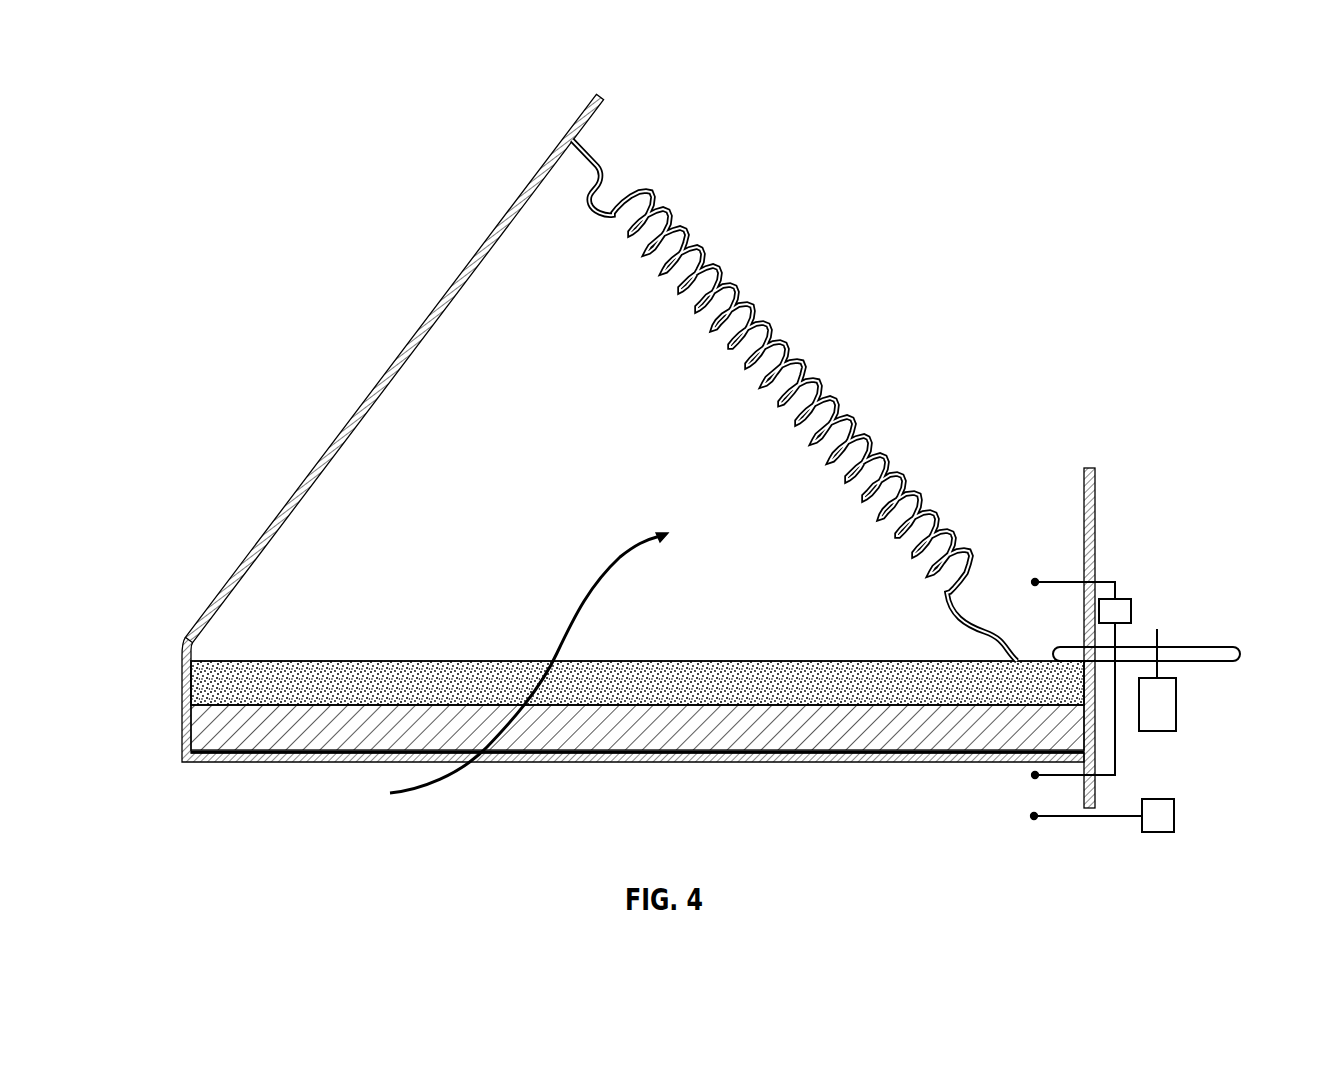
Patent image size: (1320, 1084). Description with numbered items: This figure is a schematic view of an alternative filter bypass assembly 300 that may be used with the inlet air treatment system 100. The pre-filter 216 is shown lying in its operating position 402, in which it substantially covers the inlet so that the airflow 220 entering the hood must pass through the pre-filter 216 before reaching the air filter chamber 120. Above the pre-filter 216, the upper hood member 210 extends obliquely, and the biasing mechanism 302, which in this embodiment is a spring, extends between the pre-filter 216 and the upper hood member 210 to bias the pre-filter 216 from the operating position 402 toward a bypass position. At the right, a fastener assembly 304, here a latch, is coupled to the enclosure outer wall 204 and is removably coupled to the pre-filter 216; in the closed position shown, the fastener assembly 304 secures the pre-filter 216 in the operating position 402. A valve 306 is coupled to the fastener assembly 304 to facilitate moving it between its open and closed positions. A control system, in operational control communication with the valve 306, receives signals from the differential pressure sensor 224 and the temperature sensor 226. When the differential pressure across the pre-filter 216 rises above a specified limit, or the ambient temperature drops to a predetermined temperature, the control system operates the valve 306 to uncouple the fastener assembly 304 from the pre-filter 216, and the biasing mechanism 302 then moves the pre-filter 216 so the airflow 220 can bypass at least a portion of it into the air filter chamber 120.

The inlet air treatment system 100 is at (885, 138).
The air filter chamber 120 is at (1182, 265).
The outer wall 204 is at (1097, 505).
The upper hood member 210 is at (467, 267).
The pre-filter 216 is at (832, 660).
The airflow 220 is at (605, 576).
The differential pressure sensor 224 is at (1122, 599).
The temperature sensor 226 is at (1158, 799).
The filter bypass assembly 300 is at (990, 825).
The biasing mechanism 302 is at (885, 333).
The fastener assembly 304 is at (1188, 647).
The valve 306 is at (1157, 732).
The operating position 402 is at (716, 603).